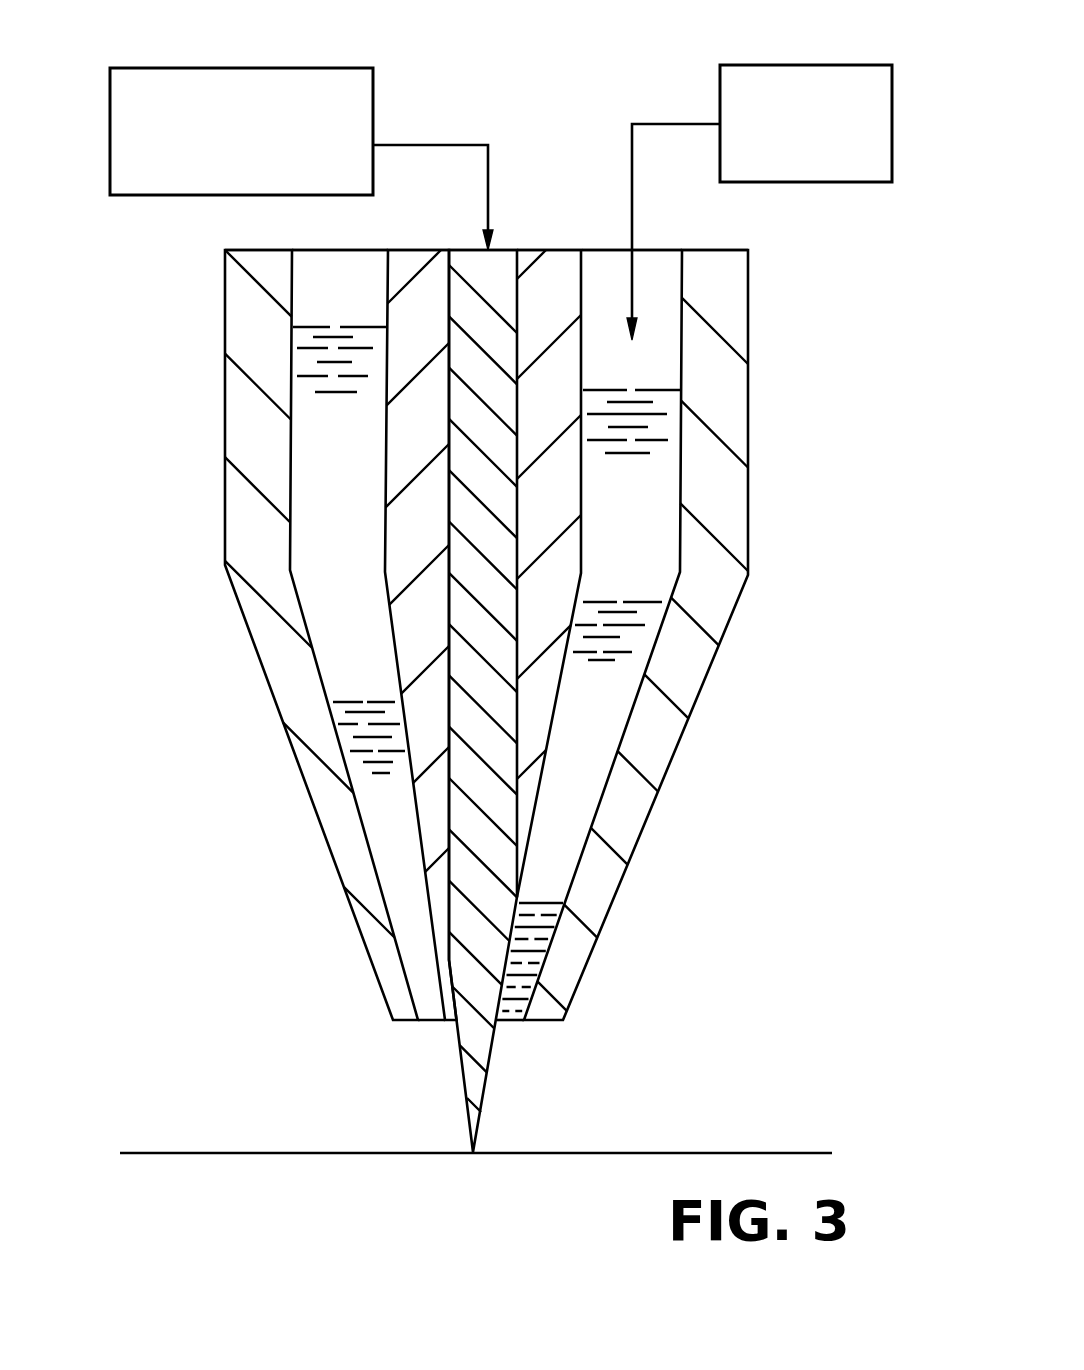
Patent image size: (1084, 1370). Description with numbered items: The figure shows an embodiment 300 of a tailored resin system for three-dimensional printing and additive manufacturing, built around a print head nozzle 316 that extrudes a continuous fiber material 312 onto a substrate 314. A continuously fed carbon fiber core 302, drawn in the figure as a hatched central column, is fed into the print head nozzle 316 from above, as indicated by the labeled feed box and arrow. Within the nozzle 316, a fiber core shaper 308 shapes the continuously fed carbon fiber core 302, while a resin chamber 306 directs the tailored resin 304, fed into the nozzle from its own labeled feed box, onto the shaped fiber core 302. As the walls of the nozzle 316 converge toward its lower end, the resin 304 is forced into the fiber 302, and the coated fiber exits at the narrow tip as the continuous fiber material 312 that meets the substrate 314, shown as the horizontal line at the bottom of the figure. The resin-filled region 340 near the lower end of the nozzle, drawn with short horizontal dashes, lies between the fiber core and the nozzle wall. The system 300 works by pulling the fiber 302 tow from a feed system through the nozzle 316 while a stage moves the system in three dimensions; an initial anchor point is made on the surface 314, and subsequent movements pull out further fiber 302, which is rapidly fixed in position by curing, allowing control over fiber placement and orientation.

The embodiment 300 is at (566, 83).
The continuously fed carbon fiber core 302 is at (187, 195).
The resin 304 is at (828, 183).
The resin chamber 306 is at (657, 534).
The fiber core shaper 308 is at (383, 445).
The continuous fiber material 312 is at (483, 1100).
The substrate 314 is at (728, 1152).
The print head nozzle 316 is at (223, 785).
The resin coating region 340 is at (577, 992).